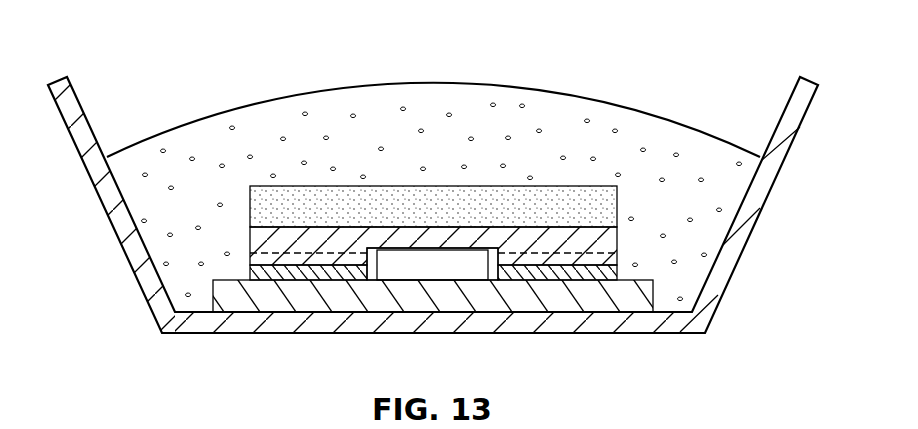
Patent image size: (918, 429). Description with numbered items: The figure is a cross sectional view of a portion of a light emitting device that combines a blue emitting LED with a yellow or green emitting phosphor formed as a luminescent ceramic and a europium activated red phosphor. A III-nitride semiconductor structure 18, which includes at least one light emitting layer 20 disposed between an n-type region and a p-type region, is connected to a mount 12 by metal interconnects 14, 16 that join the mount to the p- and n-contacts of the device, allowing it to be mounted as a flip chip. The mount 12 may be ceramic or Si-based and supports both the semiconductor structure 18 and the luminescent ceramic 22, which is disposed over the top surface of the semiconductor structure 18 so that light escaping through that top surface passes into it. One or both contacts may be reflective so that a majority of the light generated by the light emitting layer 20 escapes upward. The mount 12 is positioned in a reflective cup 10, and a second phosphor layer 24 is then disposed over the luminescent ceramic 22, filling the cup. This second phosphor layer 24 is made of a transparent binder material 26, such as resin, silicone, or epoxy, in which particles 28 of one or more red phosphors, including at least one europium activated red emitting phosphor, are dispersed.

The reflective cup 10 is at (710, 296).
The mount 12 is at (628, 298).
The metal interconnect 14 is at (543, 272).
The metal interconnect 16 is at (458, 265).
The III-nitride semiconductor structure 18 is at (270, 240).
The light emitting layer 20 is at (315, 257).
The luminescent ceramic 22 is at (400, 207).
The second phosphor layer 24 is at (657, 92).
The transparent binder material 26 is at (537, 108).
The particles 28 is at (449, 98).